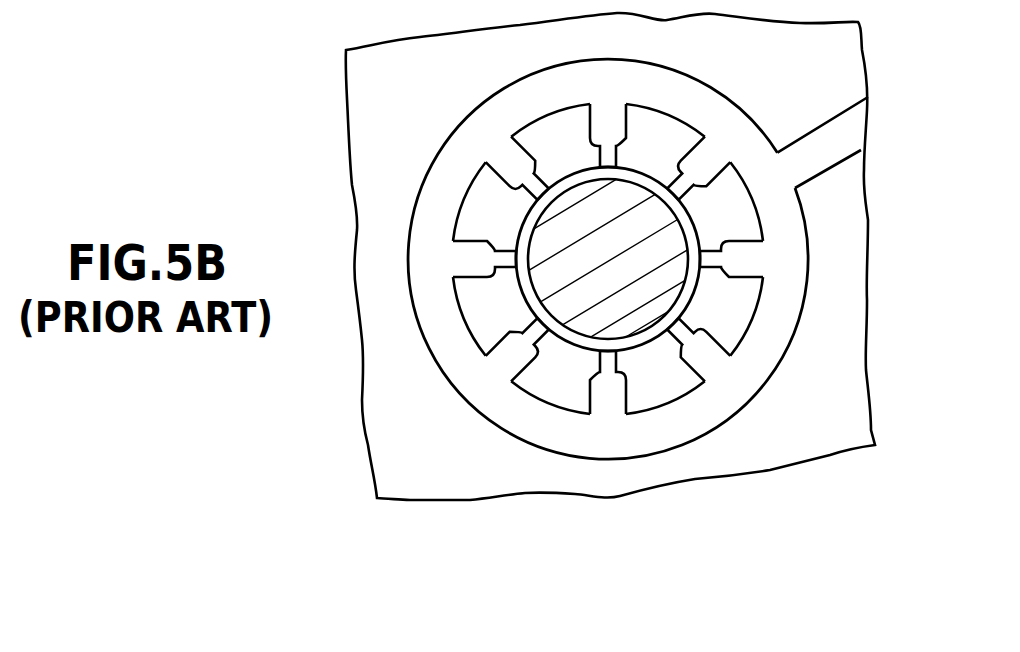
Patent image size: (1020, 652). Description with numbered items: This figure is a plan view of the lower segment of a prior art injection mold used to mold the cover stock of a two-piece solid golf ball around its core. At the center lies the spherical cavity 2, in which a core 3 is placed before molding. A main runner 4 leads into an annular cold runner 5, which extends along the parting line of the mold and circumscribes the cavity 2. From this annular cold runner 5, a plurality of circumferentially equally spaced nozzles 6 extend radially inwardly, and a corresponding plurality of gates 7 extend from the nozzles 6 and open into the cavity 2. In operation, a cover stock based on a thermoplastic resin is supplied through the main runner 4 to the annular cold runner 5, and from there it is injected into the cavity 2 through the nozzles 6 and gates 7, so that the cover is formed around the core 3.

The spherical cavity 2 is at (581, 338).
The core 3 is at (648, 303).
The main runner 4 is at (842, 135).
The annular cold runner 5 is at (785, 241).
The nozzles 6 is at (607, 397).
The gates 7 is at (716, 264).